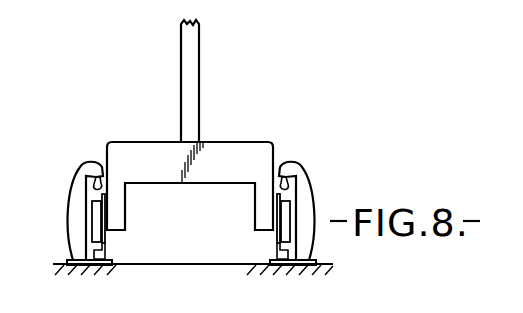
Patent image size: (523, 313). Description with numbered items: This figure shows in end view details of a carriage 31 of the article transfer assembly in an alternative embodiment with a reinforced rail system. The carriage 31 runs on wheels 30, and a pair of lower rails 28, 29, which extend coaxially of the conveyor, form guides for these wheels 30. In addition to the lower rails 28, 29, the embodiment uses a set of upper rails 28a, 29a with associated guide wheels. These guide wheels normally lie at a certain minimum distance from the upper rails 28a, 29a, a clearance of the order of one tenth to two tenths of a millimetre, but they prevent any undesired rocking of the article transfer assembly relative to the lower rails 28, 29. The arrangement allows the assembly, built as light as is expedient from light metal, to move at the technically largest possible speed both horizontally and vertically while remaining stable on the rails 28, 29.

The rail 28 is at (100, 253).
The upper rail 28a is at (84, 172).
The rail 29 is at (280, 249).
The upper rail 29a is at (300, 164).
The wheel 30 is at (99, 234).
The carriage 31 is at (148, 152).